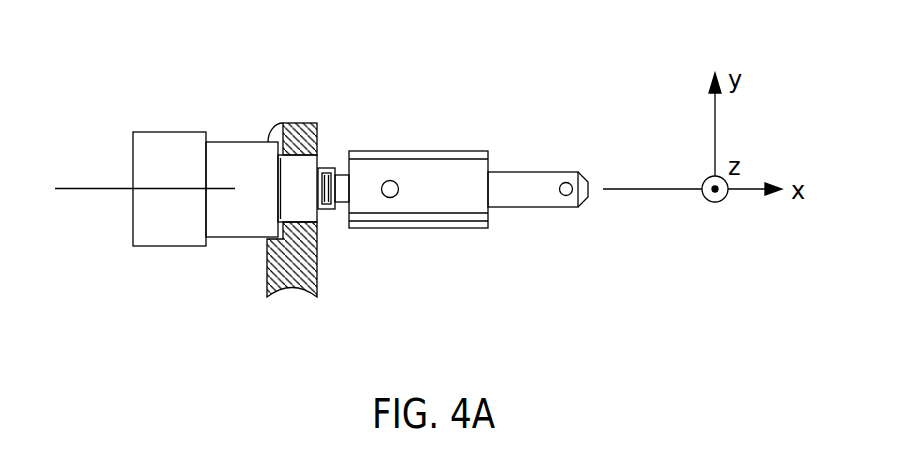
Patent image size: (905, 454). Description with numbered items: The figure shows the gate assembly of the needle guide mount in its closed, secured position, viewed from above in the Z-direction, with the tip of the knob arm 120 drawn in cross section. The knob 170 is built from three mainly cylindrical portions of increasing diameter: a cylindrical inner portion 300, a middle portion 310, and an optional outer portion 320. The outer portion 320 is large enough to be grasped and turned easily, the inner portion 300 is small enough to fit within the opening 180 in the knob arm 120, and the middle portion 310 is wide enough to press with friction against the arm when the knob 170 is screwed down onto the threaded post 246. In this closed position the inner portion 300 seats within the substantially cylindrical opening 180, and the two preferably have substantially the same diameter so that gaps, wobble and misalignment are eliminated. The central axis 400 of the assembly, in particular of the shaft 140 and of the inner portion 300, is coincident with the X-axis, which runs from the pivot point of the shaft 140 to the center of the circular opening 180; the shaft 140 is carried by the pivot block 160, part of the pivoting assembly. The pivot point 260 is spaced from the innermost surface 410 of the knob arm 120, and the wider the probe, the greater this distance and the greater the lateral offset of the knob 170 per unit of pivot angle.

The central axis 400 is at (83, 188).
The knob 170 is at (118, 226).
The outer portion 320 is at (162, 138).
The middle portion 310 is at (236, 150).
The inner portion 300 is at (306, 165).
The knob arm 120 is at (298, 204).
The innermost surface 410 is at (318, 272).
The threaded post 246 is at (338, 166).
The opening 180 is at (303, 214).
The pivot block 160 is at (418, 151).
The shaft 140 is at (522, 172).
The pivot point 260 is at (567, 210).